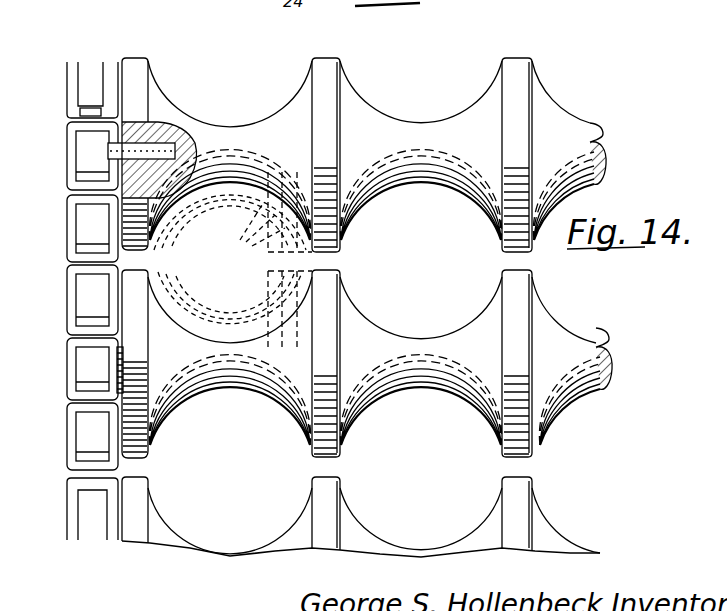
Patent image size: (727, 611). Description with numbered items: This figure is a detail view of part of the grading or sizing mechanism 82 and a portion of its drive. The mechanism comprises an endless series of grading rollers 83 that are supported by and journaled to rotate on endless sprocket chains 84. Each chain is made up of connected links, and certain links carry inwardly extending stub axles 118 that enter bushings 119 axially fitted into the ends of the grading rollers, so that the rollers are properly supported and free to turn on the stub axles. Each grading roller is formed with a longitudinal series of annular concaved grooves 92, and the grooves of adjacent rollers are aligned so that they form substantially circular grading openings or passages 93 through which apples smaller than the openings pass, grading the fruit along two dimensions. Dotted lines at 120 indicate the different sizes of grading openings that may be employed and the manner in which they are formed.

The grading or sizing mechanism 82 is at (522, 62).
The grading rollers 83 is at (327, 68).
The endless sprocket chains 84 is at (68, 281).
The annular concaved grooves 92 is at (232, 138).
The grading openings or passages 93 is at (208, 292).
The stub axles 118 is at (156, 152).
The bushings 119 is at (165, 195).
The different sizes of grading openings 120 is at (233, 261).